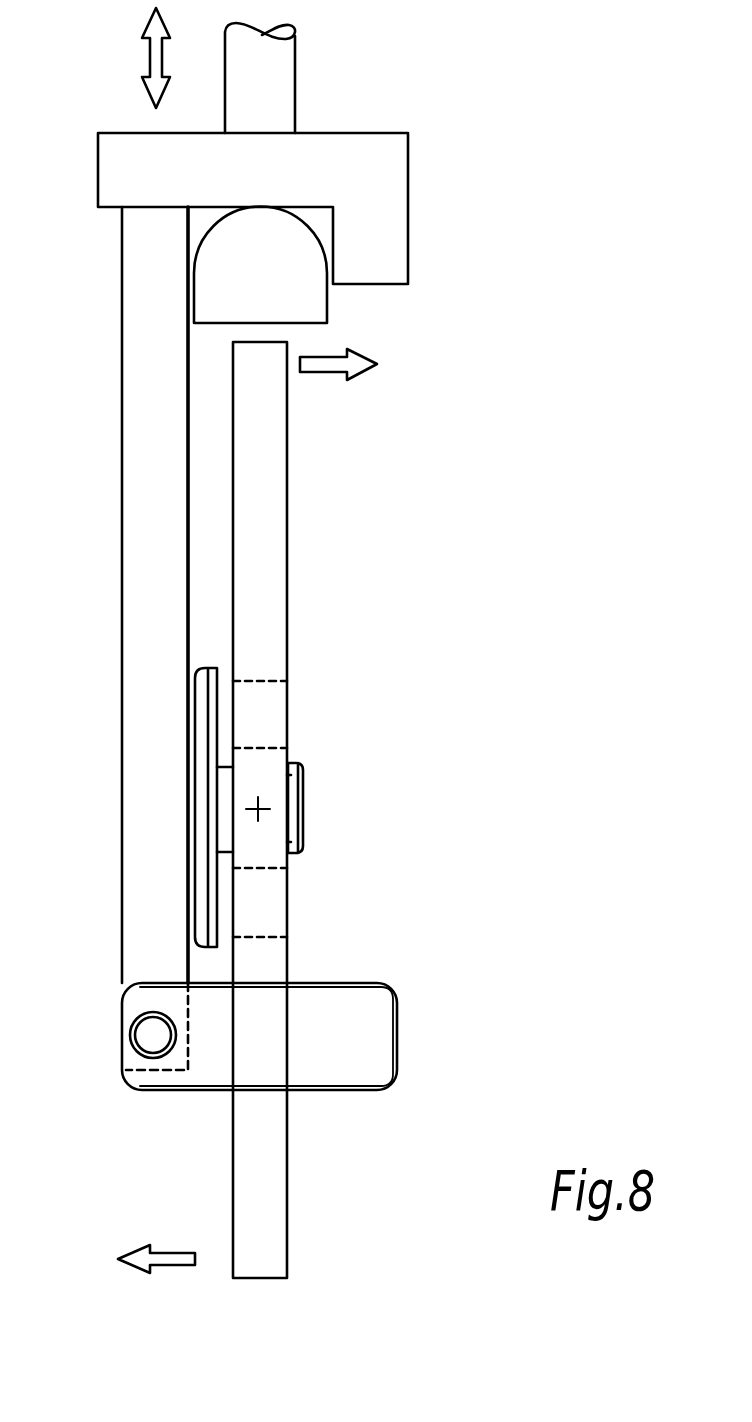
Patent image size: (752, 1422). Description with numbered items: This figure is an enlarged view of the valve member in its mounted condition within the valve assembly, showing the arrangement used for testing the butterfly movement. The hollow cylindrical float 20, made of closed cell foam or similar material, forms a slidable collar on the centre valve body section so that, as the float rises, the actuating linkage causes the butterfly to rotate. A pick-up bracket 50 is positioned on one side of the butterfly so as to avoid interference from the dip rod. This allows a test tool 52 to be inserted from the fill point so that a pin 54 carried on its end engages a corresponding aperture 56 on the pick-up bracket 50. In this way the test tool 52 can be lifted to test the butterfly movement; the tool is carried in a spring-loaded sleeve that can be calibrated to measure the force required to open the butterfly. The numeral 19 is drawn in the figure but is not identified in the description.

The hollow cylindrical float 20 is at (122, 452).
The test tool 52 is at (140, 578).
The pick-up bracket 50 is at (212, 1077).
The hidden end of strip 19 is at (168, 1077).
The pin 54 is at (150, 1040).
The aperture 56 is at (130, 1032).